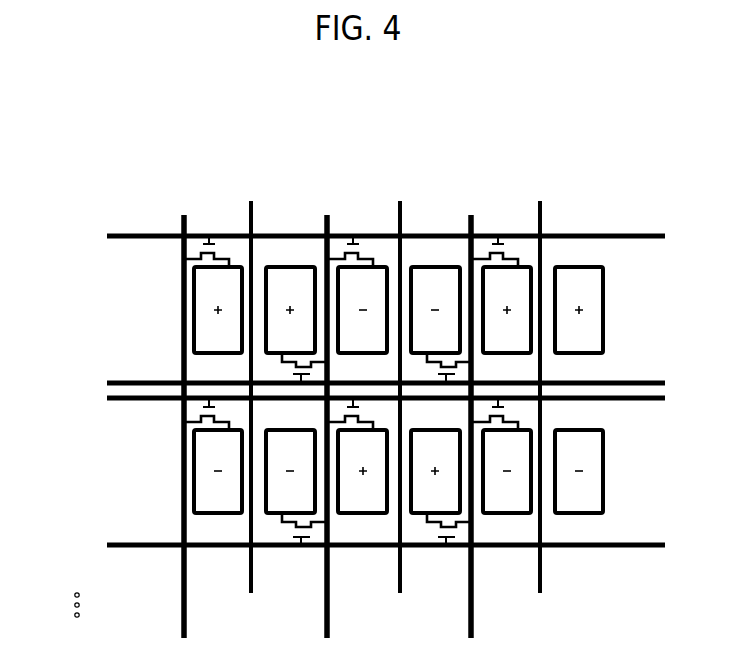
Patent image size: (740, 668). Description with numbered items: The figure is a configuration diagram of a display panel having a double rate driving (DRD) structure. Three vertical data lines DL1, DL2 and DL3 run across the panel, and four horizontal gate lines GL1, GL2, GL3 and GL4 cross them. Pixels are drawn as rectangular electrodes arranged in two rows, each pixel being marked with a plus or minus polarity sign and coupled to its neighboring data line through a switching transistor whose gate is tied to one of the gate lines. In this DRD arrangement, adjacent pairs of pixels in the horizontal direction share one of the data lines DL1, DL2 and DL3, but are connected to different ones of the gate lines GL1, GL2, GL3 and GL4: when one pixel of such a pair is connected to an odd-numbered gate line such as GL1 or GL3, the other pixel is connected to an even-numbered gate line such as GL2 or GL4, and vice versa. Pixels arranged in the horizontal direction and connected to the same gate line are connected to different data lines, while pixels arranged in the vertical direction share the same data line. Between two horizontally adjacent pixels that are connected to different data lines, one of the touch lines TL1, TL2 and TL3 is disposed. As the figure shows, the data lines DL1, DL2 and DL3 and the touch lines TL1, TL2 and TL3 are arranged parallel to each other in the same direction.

The data line DL1 is at (181, 407).
The data line DL2 is at (329, 404).
The data line DL3 is at (473, 402).
The gate line GL1 is at (358, 236).
The gate line GL2 is at (360, 381).
The gate line GL3 is at (360, 405).
The gate line GL4 is at (360, 546).
The touch line TL1 is at (250, 422).
The touch line TL2 is at (389, 422).
The touch line TL3 is at (533, 422).